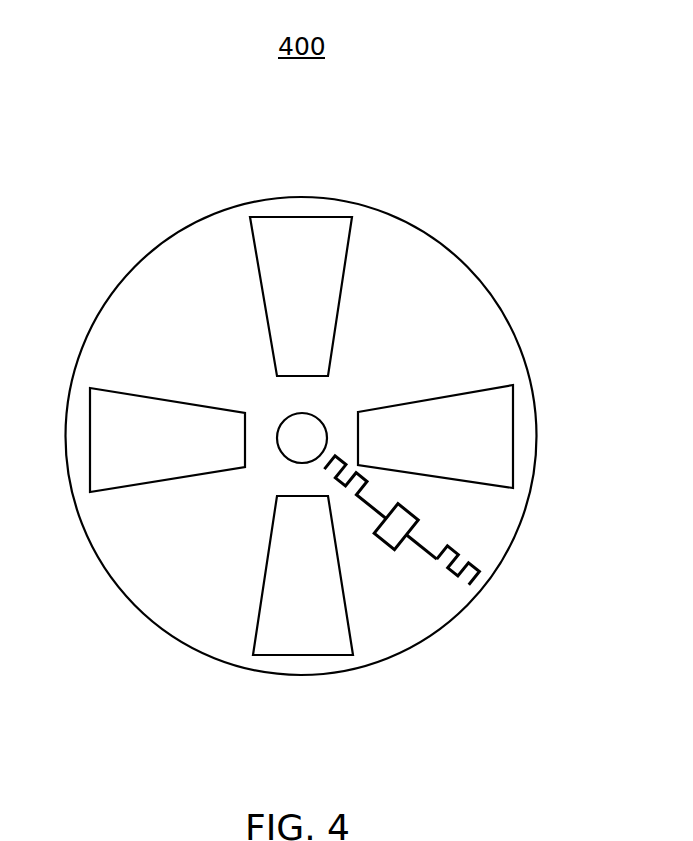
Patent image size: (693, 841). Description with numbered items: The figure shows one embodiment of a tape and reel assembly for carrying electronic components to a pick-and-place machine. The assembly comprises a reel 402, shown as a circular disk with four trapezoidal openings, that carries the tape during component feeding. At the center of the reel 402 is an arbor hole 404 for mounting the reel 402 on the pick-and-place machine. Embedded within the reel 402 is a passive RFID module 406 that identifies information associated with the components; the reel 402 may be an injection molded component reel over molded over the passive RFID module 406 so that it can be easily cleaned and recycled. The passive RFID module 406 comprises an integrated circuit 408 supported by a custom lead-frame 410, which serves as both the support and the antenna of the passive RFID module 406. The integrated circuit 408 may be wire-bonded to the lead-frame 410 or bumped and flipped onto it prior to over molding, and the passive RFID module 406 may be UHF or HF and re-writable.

The reel 402 is at (455, 252).
The arbor hole 404 is at (298, 440).
The passive RFID module 406 is at (457, 588).
The integrated circuit 408 is at (397, 540).
The lead-frame 410 is at (480, 575).